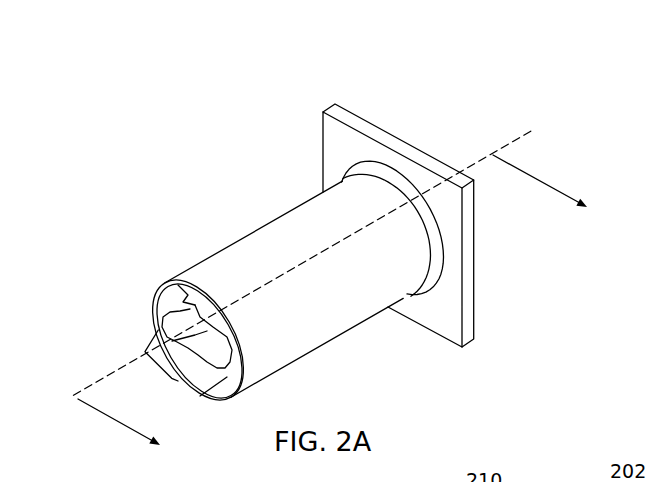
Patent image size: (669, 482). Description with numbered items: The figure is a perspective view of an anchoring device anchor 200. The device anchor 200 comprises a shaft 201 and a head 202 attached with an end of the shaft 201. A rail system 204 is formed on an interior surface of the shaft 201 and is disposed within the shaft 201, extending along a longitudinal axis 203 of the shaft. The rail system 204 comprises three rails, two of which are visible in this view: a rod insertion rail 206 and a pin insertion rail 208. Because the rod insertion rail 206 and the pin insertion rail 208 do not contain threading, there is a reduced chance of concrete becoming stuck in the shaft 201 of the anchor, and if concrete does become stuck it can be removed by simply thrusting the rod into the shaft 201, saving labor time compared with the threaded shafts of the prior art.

The device anchor 200 is at (240, 117).
The shaft 201 is at (267, 227).
The head 202 is at (416, 146).
The longitudinal axis 203 is at (528, 140).
The rail system 204 is at (172, 378).
The rod insertion rail 206 is at (181, 297).
The pin insertion rail 208 is at (176, 312).